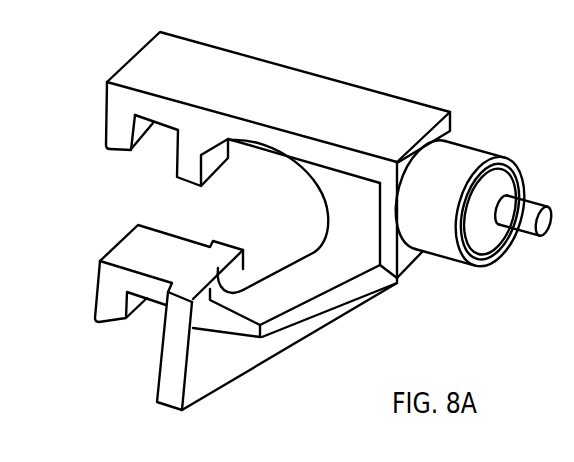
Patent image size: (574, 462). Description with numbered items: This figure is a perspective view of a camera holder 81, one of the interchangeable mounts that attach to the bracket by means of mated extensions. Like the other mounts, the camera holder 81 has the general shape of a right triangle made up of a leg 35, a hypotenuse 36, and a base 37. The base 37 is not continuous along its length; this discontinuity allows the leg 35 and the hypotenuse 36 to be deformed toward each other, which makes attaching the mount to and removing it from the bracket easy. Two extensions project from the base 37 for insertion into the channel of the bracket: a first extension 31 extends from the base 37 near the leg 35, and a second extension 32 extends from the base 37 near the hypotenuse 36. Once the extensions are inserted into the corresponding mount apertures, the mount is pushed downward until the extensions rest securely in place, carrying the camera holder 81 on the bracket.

The base 37 is at (80, 134).
The leg 35 is at (237, 54).
The first extension 31 is at (112, 152).
The second extension 32 is at (108, 332).
The hypotenuse 36 is at (235, 381).
The camera holder 81 is at (380, 96).